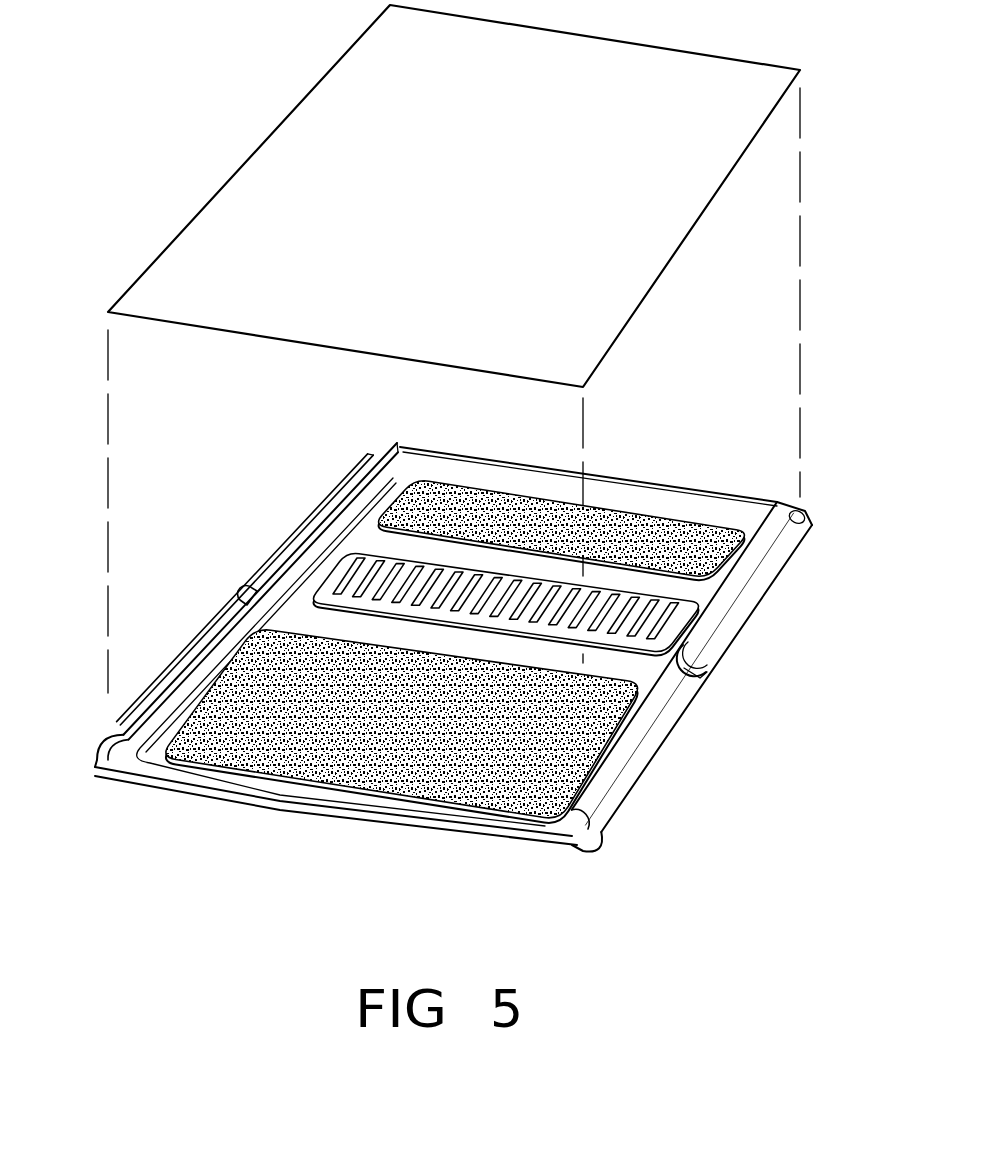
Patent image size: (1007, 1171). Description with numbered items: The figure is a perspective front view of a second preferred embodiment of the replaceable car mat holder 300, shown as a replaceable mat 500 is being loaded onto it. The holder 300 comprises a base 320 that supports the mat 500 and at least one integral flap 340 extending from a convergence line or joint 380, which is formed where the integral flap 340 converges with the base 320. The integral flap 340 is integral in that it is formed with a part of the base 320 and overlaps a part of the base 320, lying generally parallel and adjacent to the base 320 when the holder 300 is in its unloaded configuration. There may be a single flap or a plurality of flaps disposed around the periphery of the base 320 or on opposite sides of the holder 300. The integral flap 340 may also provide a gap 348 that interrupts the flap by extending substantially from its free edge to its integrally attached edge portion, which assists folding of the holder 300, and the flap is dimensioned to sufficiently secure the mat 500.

The replaceable mat 500 is at (323, 115).
The replaceable car mat holder 300 is at (451, 672).
The base 320 is at (273, 805).
The integral flap 340 is at (320, 528).
The gap 348 is at (248, 578).
The convergence line or joint 380 is at (112, 767).